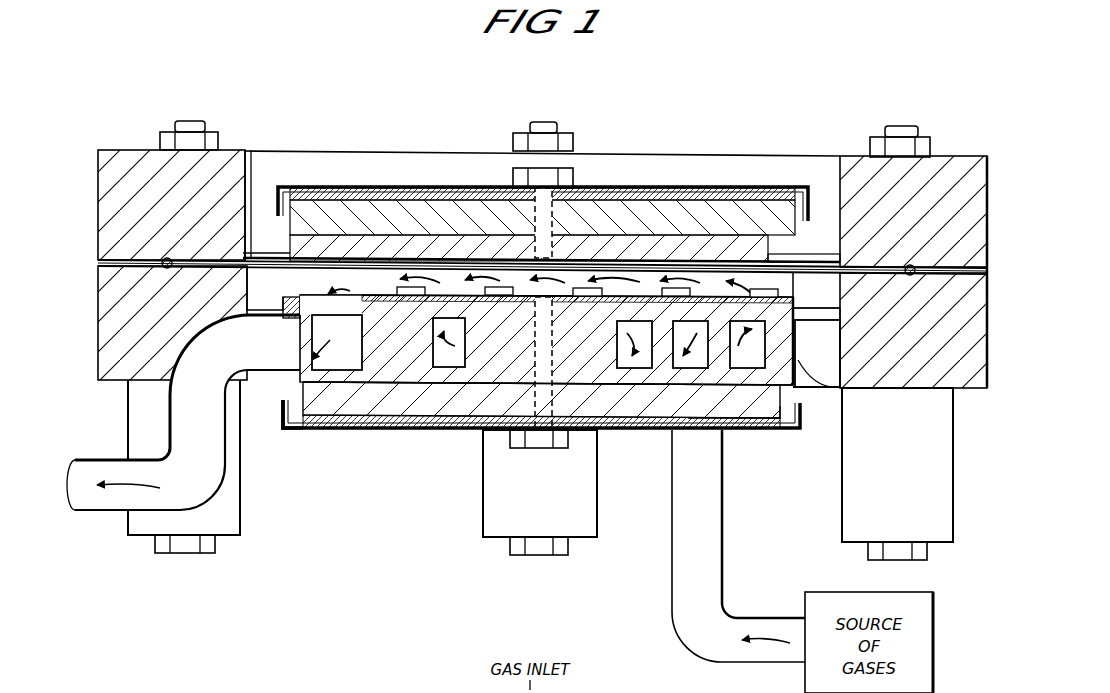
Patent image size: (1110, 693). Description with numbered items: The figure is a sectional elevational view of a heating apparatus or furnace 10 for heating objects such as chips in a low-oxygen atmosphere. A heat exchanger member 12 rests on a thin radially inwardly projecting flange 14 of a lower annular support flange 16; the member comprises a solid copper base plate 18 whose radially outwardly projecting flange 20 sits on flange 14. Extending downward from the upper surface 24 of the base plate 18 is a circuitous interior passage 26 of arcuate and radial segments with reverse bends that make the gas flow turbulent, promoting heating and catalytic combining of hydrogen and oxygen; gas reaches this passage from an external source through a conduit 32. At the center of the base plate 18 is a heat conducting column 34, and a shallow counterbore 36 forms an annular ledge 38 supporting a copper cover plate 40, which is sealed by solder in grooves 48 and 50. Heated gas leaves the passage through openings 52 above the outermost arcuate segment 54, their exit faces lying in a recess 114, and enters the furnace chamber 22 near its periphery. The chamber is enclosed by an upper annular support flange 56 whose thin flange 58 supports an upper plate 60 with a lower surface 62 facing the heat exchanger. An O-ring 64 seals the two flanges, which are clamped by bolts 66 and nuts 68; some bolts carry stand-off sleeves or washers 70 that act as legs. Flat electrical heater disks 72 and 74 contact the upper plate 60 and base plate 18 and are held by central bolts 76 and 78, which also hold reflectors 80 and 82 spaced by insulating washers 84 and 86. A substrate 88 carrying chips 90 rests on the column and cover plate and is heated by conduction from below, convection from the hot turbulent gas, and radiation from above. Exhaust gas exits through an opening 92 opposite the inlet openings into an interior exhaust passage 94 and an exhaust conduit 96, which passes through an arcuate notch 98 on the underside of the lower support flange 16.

The heating apparatus or furnace 10 is at (335, 452).
The heat exchanger member 12 is at (808, 420).
The radially inwardly projecting flange 14 is at (262, 307).
The lower annular support flange 16 is at (97, 378).
The base plate 18 is at (478, 424).
The radially outwardly projecting flange 20 is at (800, 310).
The furnace chamber 22 is at (311, 288).
The upper surface 24 is at (783, 302).
The circuitous interior passage 26 is at (375, 382).
The conduit 32 is at (724, 561).
The heat conducting column 34 is at (600, 432).
The shallow counterbore 36 is at (300, 257).
The annular ledge 38 is at (292, 320).
The cover plate 40 is at (346, 322).
The soldering groove 48 is at (468, 305).
The soldering groove 50 is at (800, 344).
The openings 52 is at (740, 412).
The radially outermost arcuate segment 54 is at (758, 427).
The upper annular support flange 56 is at (101, 153).
The radially inwardly projecting thin flange 58 is at (253, 205).
The upper plate 60 is at (330, 232).
The lower surface 62 is at (378, 250).
The O-ring 64 is at (915, 274).
The bolts 66 is at (190, 121).
The nuts 68 is at (210, 138).
The stand-off sleeves or washers 70 is at (243, 502).
The electrical heater disk 72 is at (626, 232).
The electrical heater disk 74 is at (619, 415).
The central bolt 76 is at (575, 182).
The central bolt 78 is at (540, 448).
The reflector 80 is at (745, 188).
The reflector 82 is at (340, 418).
The insulating washer 84 is at (666, 198).
The insulating washer 86 is at (385, 430).
The substrate 88 is at (553, 306).
The chips 90 is at (400, 277).
The opening 92 is at (282, 413).
The interior exhaust passage 94 is at (312, 430).
The exhaust conduit 96 is at (110, 512).
The arcuate notch 98 is at (160, 372).
The recess 114 is at (838, 394).